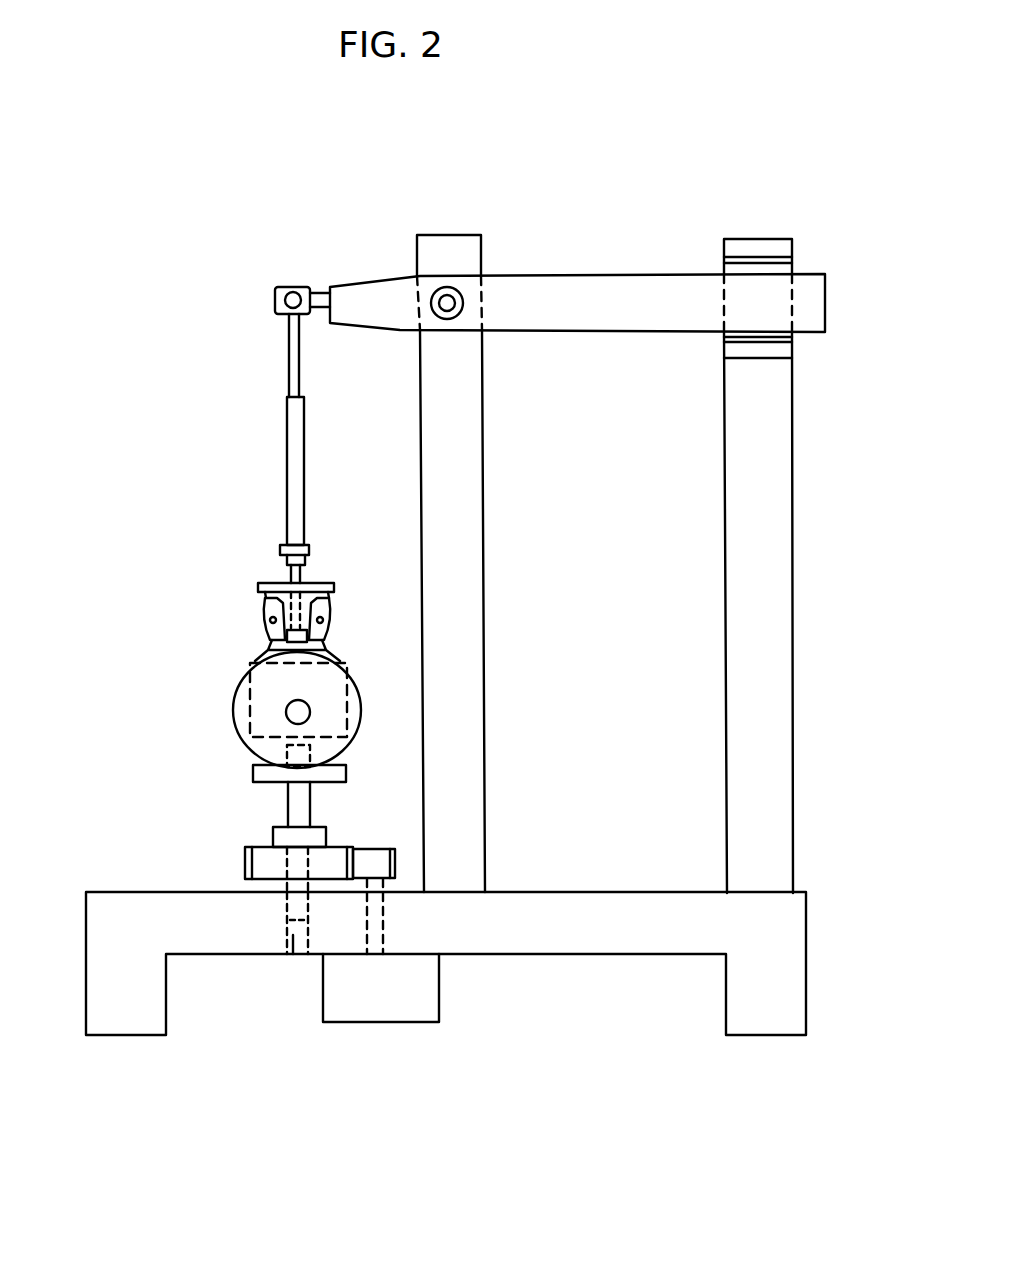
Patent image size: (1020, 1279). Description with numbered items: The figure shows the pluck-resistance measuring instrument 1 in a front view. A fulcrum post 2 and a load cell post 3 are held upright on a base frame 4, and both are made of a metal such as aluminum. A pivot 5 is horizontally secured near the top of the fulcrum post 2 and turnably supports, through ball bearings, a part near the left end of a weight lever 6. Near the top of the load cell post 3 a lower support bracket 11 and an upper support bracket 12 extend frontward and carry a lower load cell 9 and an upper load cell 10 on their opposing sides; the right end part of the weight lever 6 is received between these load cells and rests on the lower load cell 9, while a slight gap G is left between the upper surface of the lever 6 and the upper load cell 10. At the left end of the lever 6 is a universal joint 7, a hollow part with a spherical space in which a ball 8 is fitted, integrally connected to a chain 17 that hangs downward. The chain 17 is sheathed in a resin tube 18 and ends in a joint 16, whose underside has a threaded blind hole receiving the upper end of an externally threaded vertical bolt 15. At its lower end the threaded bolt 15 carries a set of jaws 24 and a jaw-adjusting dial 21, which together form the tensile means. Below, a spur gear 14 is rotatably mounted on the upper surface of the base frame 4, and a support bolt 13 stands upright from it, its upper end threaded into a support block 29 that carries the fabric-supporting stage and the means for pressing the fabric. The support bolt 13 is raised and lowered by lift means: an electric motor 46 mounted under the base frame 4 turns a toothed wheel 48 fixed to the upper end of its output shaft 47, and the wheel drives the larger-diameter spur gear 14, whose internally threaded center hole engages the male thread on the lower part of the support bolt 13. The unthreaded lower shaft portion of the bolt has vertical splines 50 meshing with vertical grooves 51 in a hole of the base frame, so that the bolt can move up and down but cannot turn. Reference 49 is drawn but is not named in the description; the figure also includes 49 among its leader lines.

The coating apparatus 1 is at (204, 310).
The fulcrum post 2 is at (484, 548).
The load cell post 3 is at (790, 594).
The base frame 4 is at (118, 898).
The pivot 5 is at (452, 318).
The weight lever 6 is at (568, 270).
The universal joint 7 is at (302, 282).
The ball 8 is at (283, 289).
The lower load cell 9 is at (792, 335).
The upper load cell 10 is at (794, 262).
The lower support bracket 11 is at (755, 358).
The upper support bracket 12 is at (747, 238).
The support bolt 13 is at (290, 797).
The spur gear 14 is at (250, 866).
The threaded bolt 15 is at (305, 567).
The joint 16 is at (283, 551).
The chain 17 is at (275, 388).
The resin tube 18 is at (272, 450).
The jaw-adjusting dial 21 is at (260, 588).
The jaws 24 is at (268, 624).
The support block 29 is at (255, 757).
The electric motor 46 is at (345, 1013).
The output shaft 47 is at (383, 930).
The toothed wheel 48 is at (370, 848).
The upper pin 49 is at (283, 864).
The vertical splines 50 is at (283, 910).
The vertical grooves 51 is at (291, 940).
The gap G is at (723, 270).